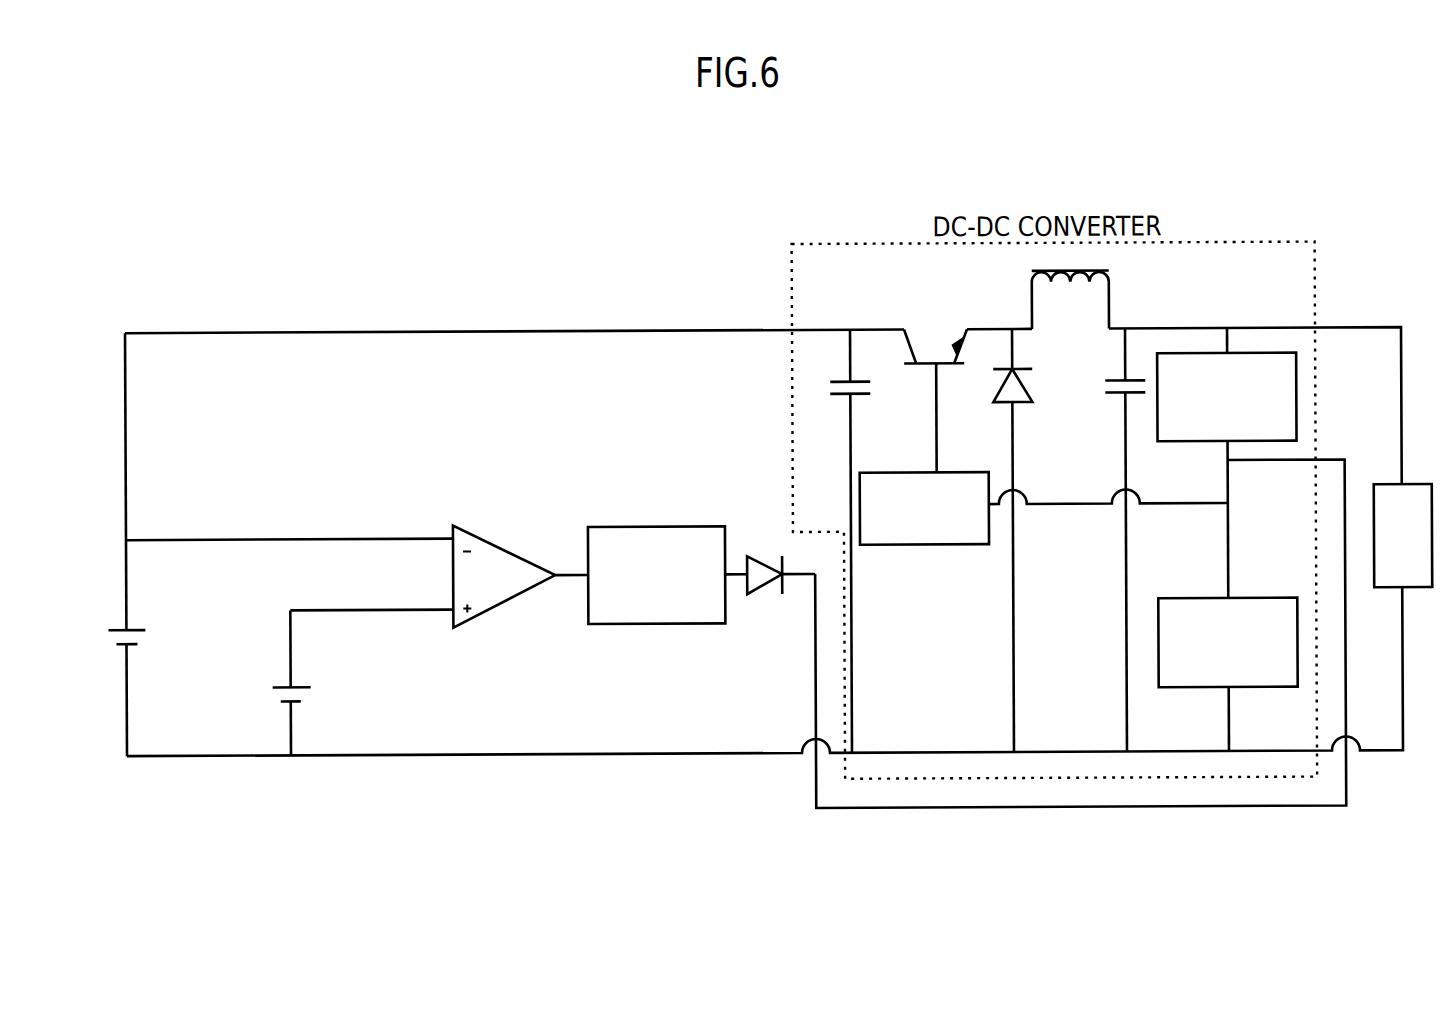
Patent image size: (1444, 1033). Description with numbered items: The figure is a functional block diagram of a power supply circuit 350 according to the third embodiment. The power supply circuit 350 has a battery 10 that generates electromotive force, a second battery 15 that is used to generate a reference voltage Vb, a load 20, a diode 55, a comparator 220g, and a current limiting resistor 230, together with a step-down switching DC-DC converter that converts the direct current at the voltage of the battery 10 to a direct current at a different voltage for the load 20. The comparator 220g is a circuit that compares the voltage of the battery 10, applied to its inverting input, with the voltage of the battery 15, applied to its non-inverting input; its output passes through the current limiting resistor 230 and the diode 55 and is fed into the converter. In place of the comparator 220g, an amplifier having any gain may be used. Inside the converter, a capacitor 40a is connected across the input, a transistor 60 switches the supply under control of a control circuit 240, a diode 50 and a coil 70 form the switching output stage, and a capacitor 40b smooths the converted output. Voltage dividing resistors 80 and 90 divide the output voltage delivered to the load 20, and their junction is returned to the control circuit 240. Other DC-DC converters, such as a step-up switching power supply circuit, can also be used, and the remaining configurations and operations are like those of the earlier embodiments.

The power supply circuit 350 is at (295, 251).
The battery 10 is at (130, 626).
The battery 15 is at (296, 684).
The comparator 220g is at (501, 546).
The current limiting resistor 230 is at (660, 526).
The diode 55 is at (766, 558).
The capacitor 40a is at (845, 381).
The transistor 60 is at (959, 342).
The control circuit 240 is at (950, 473).
The diode 50 is at (1023, 390).
The coil 70 is at (1112, 290).
The capacitor 40b is at (1116, 380).
The voltage dividing resistor 80 is at (1299, 375).
The voltage dividing resistor 90 is at (1258, 600).
The load 20 is at (1377, 487).